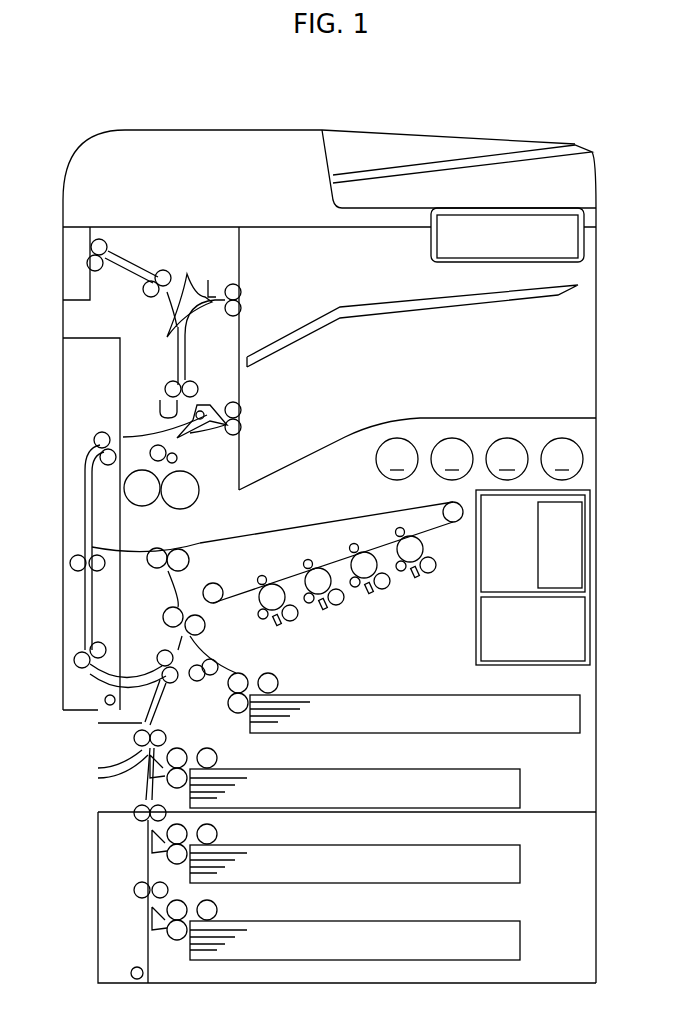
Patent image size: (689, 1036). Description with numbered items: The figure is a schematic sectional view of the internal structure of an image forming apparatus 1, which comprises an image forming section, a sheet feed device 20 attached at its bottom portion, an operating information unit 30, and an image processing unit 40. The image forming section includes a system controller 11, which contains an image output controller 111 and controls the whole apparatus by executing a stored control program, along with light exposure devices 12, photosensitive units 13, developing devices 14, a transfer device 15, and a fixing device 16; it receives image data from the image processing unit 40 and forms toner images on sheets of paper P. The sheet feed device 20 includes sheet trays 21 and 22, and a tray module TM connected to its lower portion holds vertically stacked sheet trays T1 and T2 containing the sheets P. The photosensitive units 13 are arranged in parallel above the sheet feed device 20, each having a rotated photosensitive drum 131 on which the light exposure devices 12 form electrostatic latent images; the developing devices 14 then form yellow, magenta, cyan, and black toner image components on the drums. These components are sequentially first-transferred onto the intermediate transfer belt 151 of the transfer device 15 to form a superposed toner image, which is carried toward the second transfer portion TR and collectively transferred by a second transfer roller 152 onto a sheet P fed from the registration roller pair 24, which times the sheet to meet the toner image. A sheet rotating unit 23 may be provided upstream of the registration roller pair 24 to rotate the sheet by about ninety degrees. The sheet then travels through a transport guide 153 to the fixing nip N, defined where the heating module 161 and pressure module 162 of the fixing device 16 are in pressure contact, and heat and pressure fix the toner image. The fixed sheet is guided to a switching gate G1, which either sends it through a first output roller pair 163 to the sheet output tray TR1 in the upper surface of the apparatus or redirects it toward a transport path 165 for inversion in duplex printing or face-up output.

The image forming apparatus 1 is at (66, 116).
The operating information unit 30 is at (555, 243).
The transport path 165 is at (170, 355).
The switching gate G1 is at (210, 397).
The fixing nip N is at (153, 465).
The first output roller pair 163 is at (256, 408).
The sheet output tray TR1 is at (350, 430).
The fixing device 16 is at (215, 460).
The heating module 161 is at (183, 503).
The pressure module 162 is at (143, 507).
The transfer device 15 is at (250, 520).
The intermediate transfer belt 151 is at (303, 525).
The second transfer roller 152 is at (148, 556).
The transport guide 153 is at (200, 548).
The second transfer portion TR is at (160, 578).
The registration roller pair 24 is at (206, 622).
The sheet feed device 20 is at (290, 662).
The sheet rotating unit 23 is at (240, 752).
The photosensitive drum 131 is at (417, 548).
The developing device 14 is at (393, 568).
The photosensitive unit 13 is at (433, 590).
The light exposure device 12 is at (417, 582).
The system controller 11 is at (507, 585).
The image processing unit 40 is at (563, 625).
The image output controller 111 is at (563, 565).
The sheet tray 21 is at (570, 718).
The sheet tray 22 is at (508, 788).
The sheet tray T1 is at (508, 861).
The sheet tray T2 is at (508, 938).
The tray module TM is at (88, 915).
The sheet of paper P is at (333, 697).